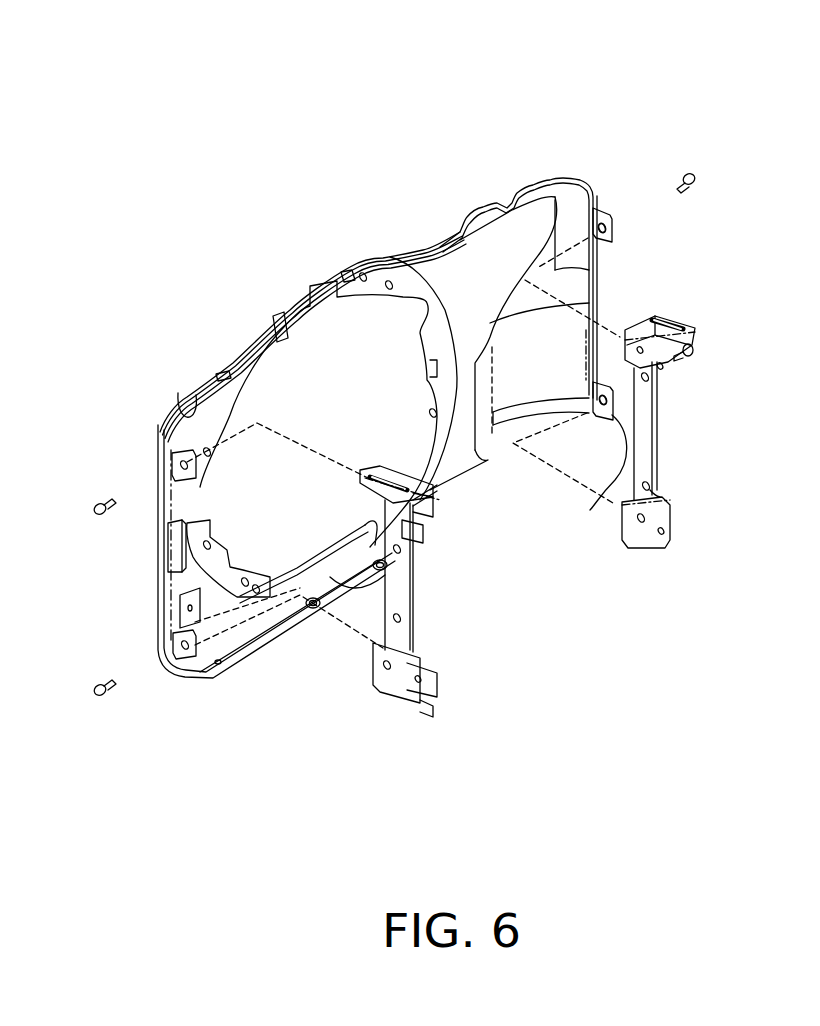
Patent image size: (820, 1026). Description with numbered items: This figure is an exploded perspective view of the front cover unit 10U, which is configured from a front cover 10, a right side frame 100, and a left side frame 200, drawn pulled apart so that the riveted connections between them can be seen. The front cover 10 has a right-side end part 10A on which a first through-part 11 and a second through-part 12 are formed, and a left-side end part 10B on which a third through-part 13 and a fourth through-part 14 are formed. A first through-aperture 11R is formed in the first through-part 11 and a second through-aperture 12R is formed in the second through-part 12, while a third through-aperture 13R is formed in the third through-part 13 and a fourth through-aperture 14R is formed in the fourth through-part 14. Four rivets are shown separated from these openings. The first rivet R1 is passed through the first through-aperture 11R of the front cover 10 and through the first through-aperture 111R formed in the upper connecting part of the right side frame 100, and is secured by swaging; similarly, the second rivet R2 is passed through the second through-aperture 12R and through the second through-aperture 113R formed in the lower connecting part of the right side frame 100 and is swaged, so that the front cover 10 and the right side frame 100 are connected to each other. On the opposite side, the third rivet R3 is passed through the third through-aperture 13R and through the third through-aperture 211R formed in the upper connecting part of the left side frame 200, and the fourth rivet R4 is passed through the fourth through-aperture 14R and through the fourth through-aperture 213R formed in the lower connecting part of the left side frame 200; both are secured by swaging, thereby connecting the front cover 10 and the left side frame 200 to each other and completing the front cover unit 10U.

The front cover unit 10U is at (305, 220).
The front cover 10 is at (252, 340).
The right-side end part 10A is at (190, 377).
The left-side end part 10B is at (545, 176).
The first through-part 11 is at (178, 425).
The first through-aperture 11R is at (173, 460).
The second through-part 12 is at (175, 623).
The second through-aperture 12R is at (172, 644).
The third through-part 13 is at (600, 207).
The third through-aperture 13R is at (614, 226).
The fourth through-part 14 is at (615, 403).
The fourth through-aperture 14R is at (600, 412).
The right side frame 100 is at (420, 718).
The first through-aperture 111R is at (420, 480).
The second through-aperture 113R is at (384, 672).
The left side frame 200 is at (640, 546).
The third through-aperture 211R is at (662, 368).
The fourth through-aperture 213R is at (662, 490).
The first rivet R1 is at (93, 508).
The second rivet R2 is at (93, 690).
The third rivet R3 is at (692, 173).
The fourth rivet R4 is at (697, 348).